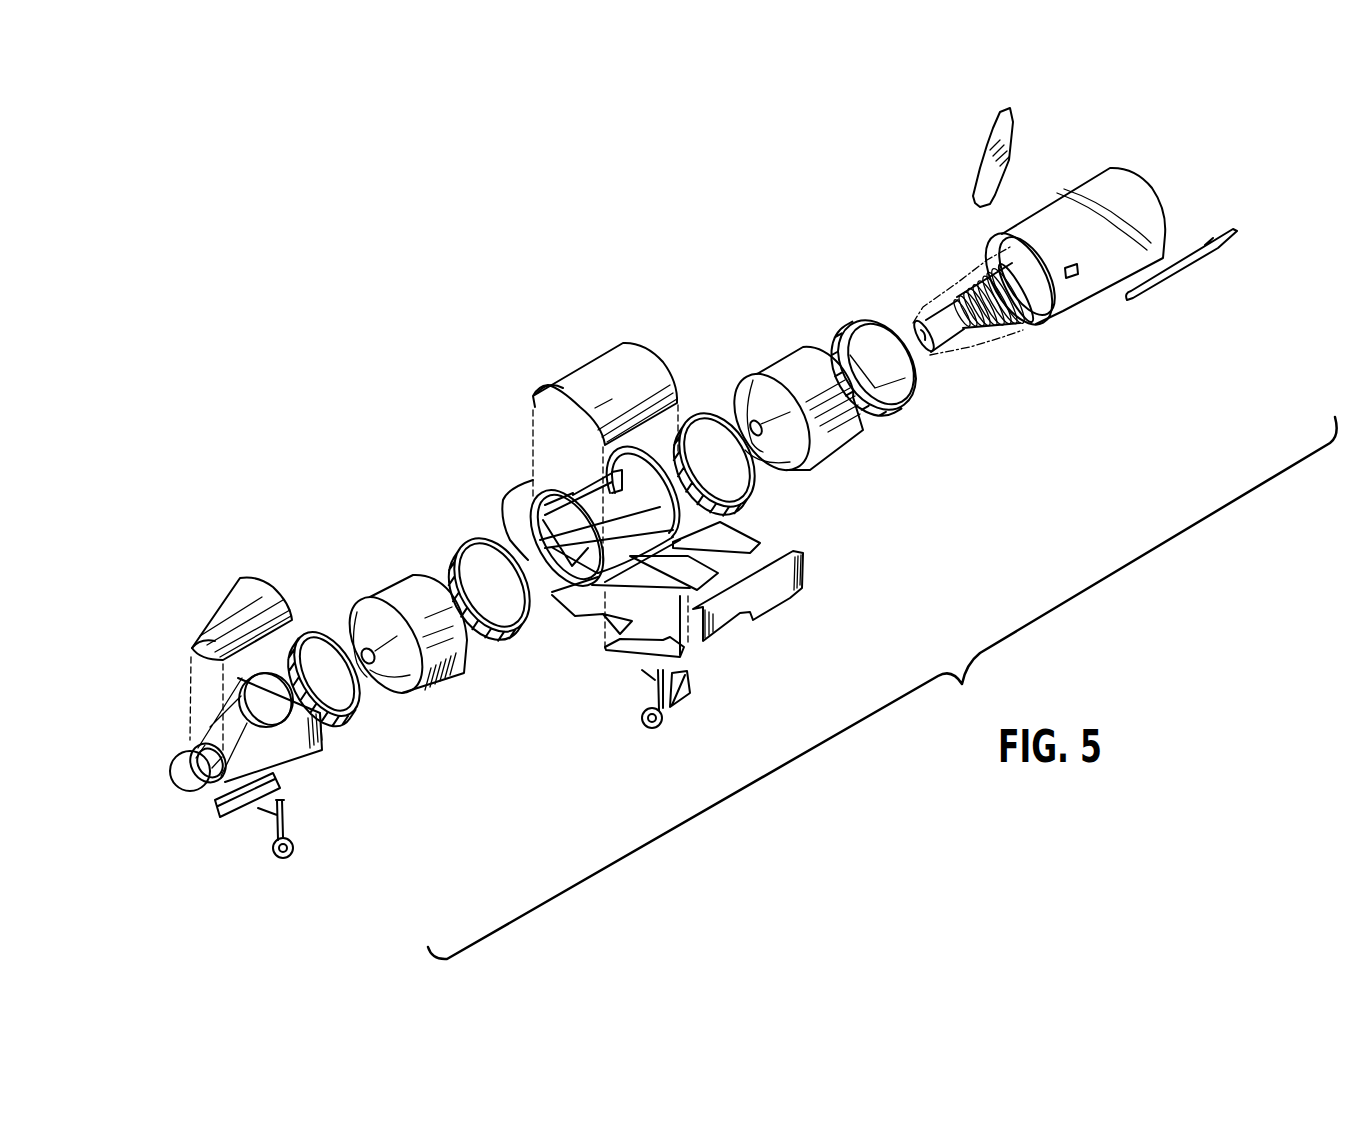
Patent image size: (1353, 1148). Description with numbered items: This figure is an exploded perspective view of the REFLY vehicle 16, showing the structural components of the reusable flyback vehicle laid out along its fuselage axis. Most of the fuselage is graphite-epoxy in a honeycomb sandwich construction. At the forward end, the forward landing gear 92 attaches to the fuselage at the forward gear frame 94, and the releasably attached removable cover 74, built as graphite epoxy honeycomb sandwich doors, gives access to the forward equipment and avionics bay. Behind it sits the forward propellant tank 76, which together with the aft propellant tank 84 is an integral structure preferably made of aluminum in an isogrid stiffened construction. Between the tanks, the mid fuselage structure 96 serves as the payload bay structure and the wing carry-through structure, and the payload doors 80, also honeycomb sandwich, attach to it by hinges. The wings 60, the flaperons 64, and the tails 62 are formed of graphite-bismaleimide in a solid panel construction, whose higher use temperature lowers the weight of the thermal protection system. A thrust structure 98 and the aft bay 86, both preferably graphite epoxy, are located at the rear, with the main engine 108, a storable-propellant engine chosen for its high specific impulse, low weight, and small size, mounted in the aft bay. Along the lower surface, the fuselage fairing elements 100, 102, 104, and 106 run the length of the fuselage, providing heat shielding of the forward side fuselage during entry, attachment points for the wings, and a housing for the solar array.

The REFLY vehicle 16 is at (273, 471).
The wings 60 is at (507, 513).
The tails 62 is at (1187, 264).
The flaperons 64 is at (543, 481).
The removable cover 74 is at (212, 601).
The forward propellant tank 76 is at (377, 597).
The payload doors 80 is at (567, 372).
The aft propellant tank 84 is at (770, 362).
The aft bay 86 is at (1070, 266).
The forward landing gear 92 is at (290, 844).
The forward gear frame 94 is at (233, 677).
The mid fuselage structure 96 is at (552, 575).
The thrust structure 98 is at (910, 393).
The fuselage fairing element 100 is at (322, 755).
The fuselage fairing element 102 is at (459, 674).
The fuselage fairing element 104 is at (835, 455).
The fuselage fairing element 106 is at (1083, 308).
The main engine 108 is at (990, 322).